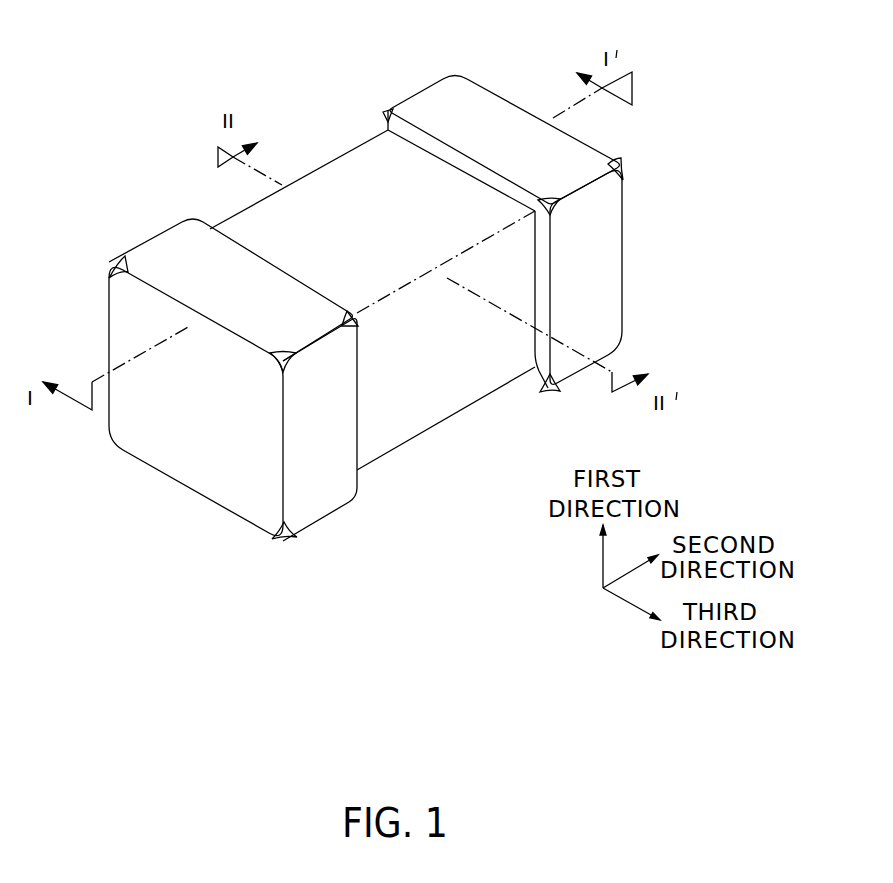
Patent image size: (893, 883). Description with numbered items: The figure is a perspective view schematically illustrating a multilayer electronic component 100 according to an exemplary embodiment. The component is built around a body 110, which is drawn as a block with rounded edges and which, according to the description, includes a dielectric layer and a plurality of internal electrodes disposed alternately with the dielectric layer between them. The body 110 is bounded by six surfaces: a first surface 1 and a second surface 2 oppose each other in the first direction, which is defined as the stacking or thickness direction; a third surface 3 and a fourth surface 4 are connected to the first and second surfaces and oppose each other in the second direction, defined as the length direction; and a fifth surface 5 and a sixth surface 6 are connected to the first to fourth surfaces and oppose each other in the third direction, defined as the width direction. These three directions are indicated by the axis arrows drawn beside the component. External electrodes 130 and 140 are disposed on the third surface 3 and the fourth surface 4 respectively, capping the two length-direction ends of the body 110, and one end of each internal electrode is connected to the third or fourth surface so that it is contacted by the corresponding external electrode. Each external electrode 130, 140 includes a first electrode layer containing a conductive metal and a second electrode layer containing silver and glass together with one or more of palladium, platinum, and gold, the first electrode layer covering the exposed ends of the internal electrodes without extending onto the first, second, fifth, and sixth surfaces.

The multilayer electronic component 100 is at (150, 41).
The body 110 is at (247, 238).
The external electrode 130 is at (165, 257).
The external electrode 140 is at (430, 102).
The first surface 1 is at (407, 390).
The second surface 2 is at (382, 190).
The third surface 3 is at (203, 438).
The fourth surface 4 is at (582, 137).
The fifth surface 5 is at (331, 212).
The sixth surface 6 is at (465, 358).